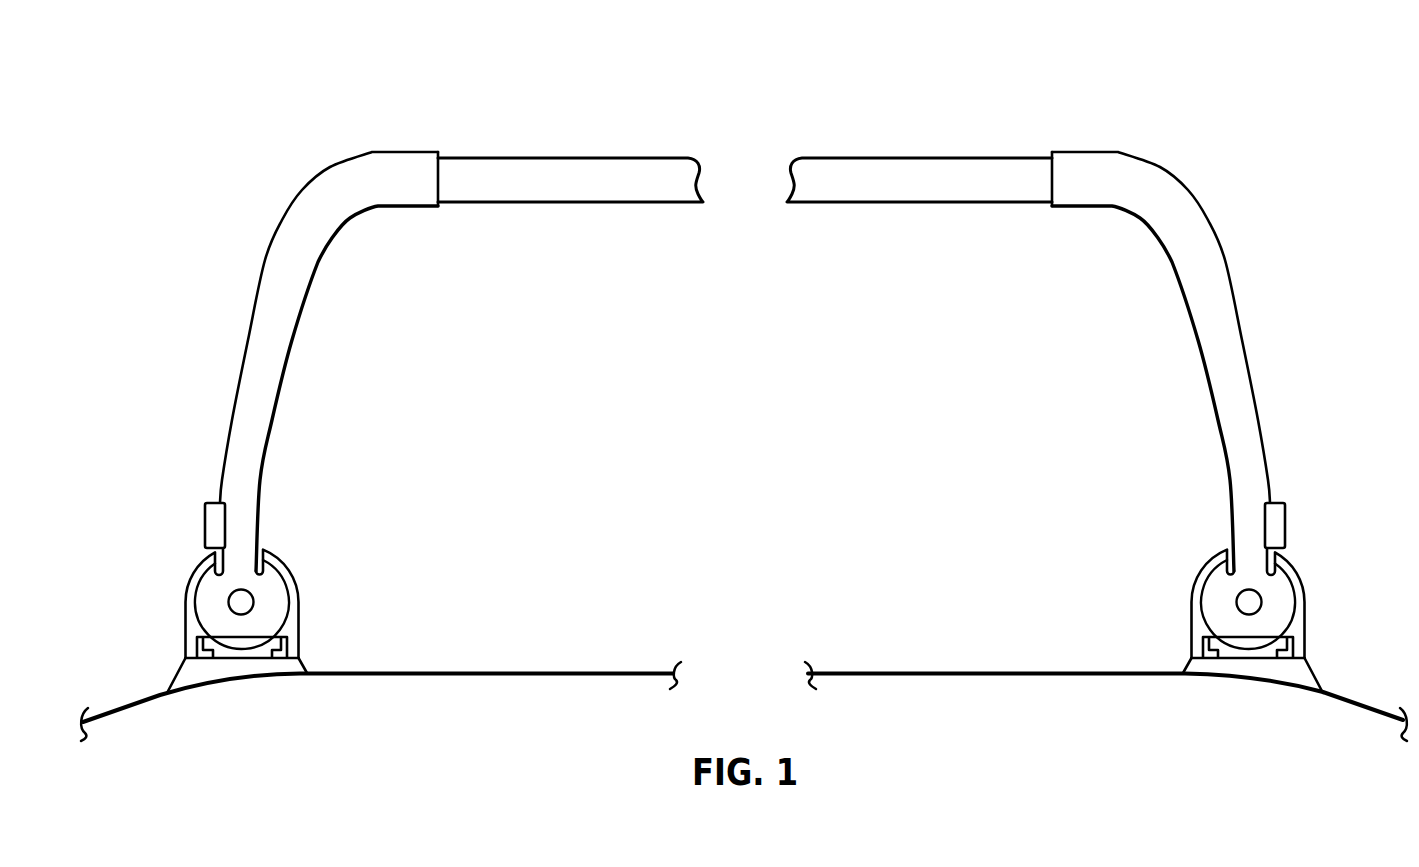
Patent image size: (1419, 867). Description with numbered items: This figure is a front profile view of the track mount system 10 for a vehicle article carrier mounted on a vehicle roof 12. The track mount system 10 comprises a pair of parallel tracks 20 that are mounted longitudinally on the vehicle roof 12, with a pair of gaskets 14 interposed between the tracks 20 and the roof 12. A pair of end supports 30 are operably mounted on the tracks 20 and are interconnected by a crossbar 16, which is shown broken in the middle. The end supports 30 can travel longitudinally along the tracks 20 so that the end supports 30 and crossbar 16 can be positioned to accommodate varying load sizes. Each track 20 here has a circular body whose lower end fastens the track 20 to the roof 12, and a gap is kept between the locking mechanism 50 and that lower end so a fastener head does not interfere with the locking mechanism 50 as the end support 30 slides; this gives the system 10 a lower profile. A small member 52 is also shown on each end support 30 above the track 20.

The track mount system 10 is at (284, 111).
The vehicle roof 12 is at (475, 671).
The gasket 14 is at (208, 671).
The crossbar 16 is at (568, 156).
The track 20 is at (292, 570).
The end support 30 is at (271, 225).
The locking mechanism 50 is at (213, 612).
The locking clip 52 is at (202, 526).